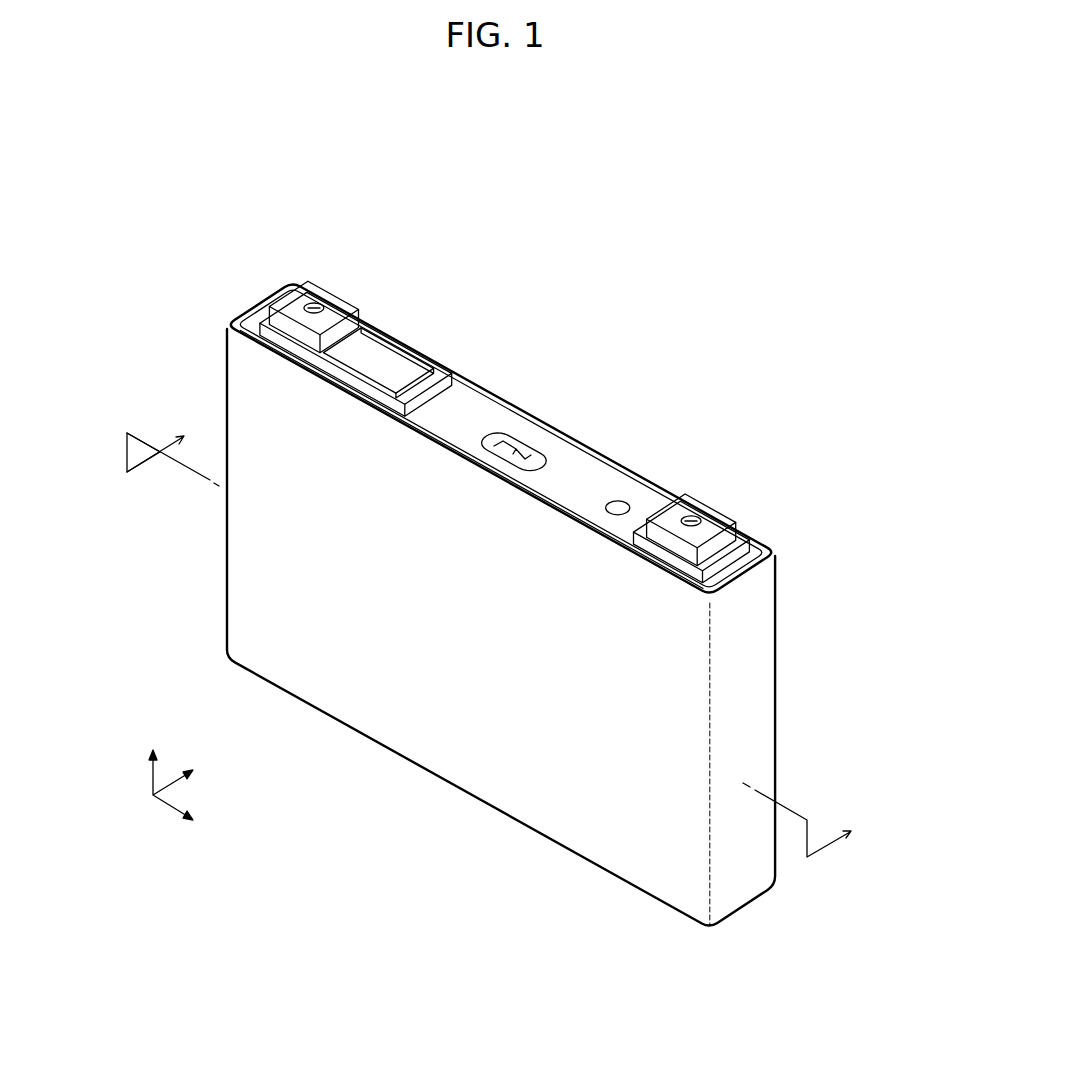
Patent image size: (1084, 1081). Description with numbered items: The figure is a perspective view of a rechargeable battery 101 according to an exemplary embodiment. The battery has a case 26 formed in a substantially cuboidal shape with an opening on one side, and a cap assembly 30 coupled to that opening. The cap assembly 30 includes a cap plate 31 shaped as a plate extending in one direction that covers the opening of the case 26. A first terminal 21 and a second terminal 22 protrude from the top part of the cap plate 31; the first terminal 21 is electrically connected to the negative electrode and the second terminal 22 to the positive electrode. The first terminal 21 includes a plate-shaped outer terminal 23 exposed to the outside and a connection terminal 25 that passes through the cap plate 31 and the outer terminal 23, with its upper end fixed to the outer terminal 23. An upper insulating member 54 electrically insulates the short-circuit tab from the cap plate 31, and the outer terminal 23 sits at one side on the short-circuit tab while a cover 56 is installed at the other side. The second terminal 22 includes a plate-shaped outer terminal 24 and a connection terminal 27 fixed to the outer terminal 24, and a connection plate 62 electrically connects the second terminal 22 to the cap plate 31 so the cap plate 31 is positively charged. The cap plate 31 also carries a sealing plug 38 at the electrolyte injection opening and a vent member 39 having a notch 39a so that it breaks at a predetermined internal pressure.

The rechargeable battery 101 is at (519, 249).
The case 26 is at (440, 742).
The cap assembly 30 is at (516, 388).
The cap plate 31 is at (468, 402).
The first terminal 21 is at (366, 301).
The outer terminal 23 is at (297, 304).
The connection terminal 25 is at (329, 270).
The second terminal 22 is at (713, 488).
The outer terminal 24 is at (682, 505).
The connection terminal 27 is at (693, 519).
The upper insulating member 54 is at (366, 346).
The cover 56 is at (383, 360).
The connection plate 62 is at (740, 541).
The sealing plug 38 is at (618, 500).
The vent member 39 is at (540, 415).
The notch 39a is at (530, 458).